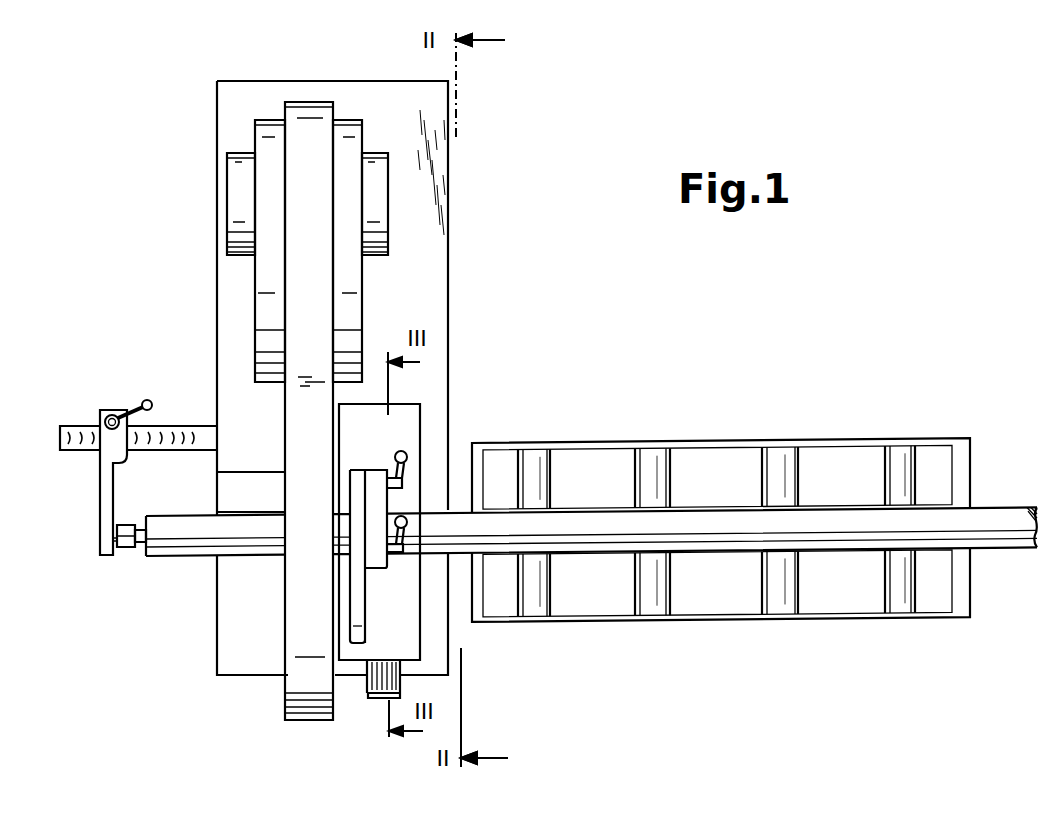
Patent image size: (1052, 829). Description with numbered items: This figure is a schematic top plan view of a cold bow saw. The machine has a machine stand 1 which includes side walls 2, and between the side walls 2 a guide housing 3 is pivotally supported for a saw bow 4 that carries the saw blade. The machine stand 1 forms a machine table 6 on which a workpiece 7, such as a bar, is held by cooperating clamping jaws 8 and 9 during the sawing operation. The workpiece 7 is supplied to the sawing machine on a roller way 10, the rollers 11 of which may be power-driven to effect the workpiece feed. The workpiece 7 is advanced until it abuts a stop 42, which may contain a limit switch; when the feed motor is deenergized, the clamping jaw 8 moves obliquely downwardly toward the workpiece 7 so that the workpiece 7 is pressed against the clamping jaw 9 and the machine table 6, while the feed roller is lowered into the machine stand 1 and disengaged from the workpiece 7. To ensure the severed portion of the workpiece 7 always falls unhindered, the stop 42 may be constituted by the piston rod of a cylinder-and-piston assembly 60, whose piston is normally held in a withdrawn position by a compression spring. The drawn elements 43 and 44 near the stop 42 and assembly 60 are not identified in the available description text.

The machine stand 1 is at (448, 317).
The side walls 2 is at (237, 190).
The guide housing 3 is at (258, 131).
The saw bow 4 is at (312, 122).
The machine table 6 is at (440, 583).
The workpiece 7 is at (997, 518).
The clamping jaw 8 is at (406, 507).
The clamping jaw 9 is at (405, 568).
The roller way 10 is at (721, 530).
The rollers 11 is at (532, 612).
The stop 42 is at (140, 547).
The stop bracket 43 is at (105, 490).
The guide rail 44 is at (202, 433).
The cylinder-and-piston assembly 60 is at (125, 553).